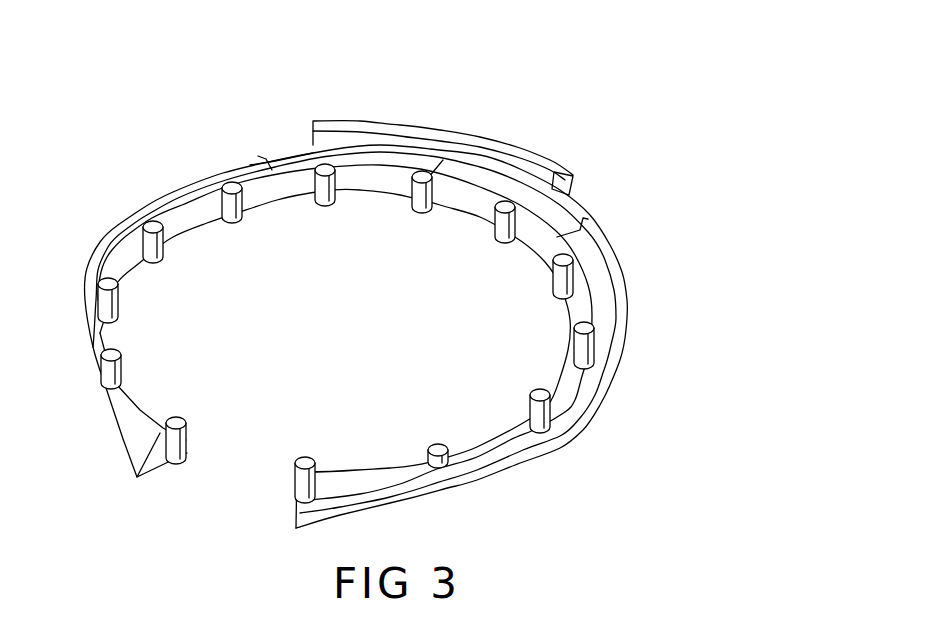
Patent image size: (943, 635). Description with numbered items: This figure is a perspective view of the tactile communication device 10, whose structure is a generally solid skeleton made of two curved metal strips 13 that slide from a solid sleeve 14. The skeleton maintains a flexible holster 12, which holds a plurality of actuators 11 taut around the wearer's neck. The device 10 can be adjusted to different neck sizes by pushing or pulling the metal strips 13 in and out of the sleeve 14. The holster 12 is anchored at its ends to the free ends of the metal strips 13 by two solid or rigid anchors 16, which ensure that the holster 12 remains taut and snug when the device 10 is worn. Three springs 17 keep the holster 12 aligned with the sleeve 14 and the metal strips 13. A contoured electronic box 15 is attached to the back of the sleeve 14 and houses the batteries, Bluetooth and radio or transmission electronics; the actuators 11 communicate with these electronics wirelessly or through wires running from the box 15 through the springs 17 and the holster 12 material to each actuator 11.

The device 10 is at (632, 252).
The actuators 11 is at (240, 218).
The flexible holster 12 is at (567, 303).
The curved metal strips 13 is at (118, 228).
The solid sleeve 14 is at (283, 140).
The contoured electronic box 15 is at (533, 137).
The anchors 16 is at (155, 483).
The springs 17 is at (263, 158).